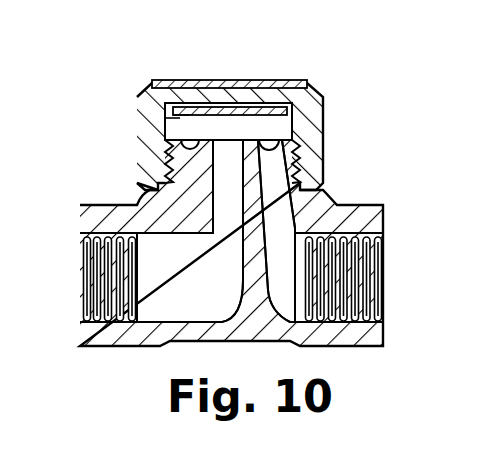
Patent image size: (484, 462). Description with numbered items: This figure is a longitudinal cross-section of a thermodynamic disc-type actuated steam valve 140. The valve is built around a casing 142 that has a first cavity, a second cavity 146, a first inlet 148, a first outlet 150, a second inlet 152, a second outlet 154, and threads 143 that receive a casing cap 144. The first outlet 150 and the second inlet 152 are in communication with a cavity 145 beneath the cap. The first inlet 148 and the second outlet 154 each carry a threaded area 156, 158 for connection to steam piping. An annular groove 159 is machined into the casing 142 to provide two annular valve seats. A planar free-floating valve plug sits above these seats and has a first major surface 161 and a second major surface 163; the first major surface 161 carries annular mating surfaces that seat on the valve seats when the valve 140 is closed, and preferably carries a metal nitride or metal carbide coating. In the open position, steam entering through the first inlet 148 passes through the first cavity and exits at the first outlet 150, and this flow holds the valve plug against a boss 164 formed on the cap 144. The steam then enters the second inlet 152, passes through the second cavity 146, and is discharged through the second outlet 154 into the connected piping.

The actuated steam valve 140 is at (360, 87).
The casing 142 is at (323, 207).
The threads 143 is at (293, 148).
The casing cap 144 is at (306, 101).
The cavity 145 is at (260, 123).
The second cavity 146 is at (292, 312).
The first inlet 148 is at (97, 277).
The first outlet 150 is at (228, 146).
The second inlet 152 is at (265, 137).
The second outlet 154 is at (382, 252).
The threaded area 156 is at (108, 322).
The threaded area 158 is at (365, 293).
The annular groove 159 is at (185, 114).
The first major surface 161 is at (178, 118).
The second major surface 163 is at (143, 90).
The boss 164 is at (240, 104).